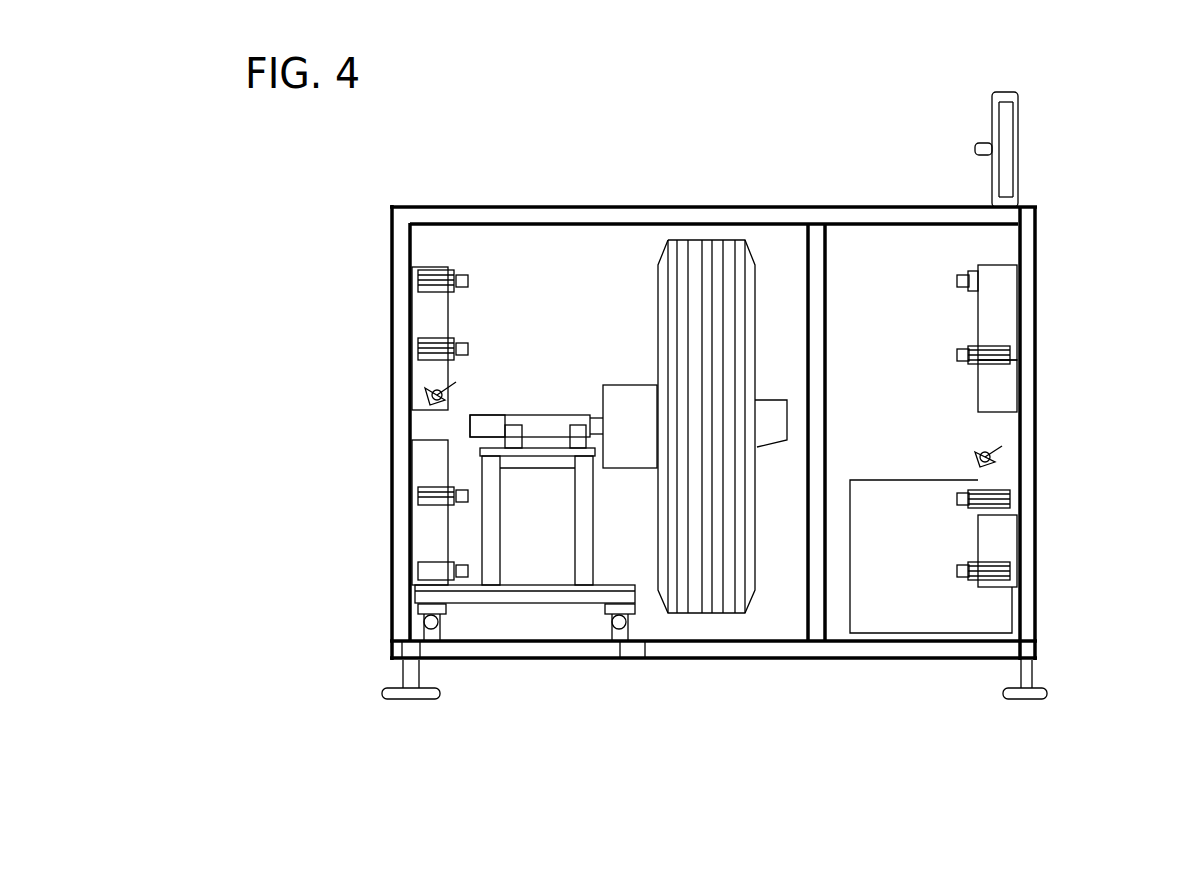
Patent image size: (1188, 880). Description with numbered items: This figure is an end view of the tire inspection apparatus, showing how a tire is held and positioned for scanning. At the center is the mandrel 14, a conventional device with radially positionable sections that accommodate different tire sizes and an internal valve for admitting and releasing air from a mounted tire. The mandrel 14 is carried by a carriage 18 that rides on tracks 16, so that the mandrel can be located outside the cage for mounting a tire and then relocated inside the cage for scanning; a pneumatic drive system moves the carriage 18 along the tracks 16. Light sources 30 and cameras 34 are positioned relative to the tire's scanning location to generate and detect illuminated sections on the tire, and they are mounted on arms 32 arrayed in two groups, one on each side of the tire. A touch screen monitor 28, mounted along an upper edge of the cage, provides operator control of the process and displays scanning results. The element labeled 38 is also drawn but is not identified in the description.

The mandrel 14 is at (775, 400).
The tracks 16 is at (617, 624).
The carriage 18 is at (508, 605).
The touch screen monitor 28 is at (1002, 125).
The light sources 30 is at (420, 388).
The arms 32 is at (1000, 313).
The cameras 34 is at (418, 335).
The base rail 38 is at (633, 628).